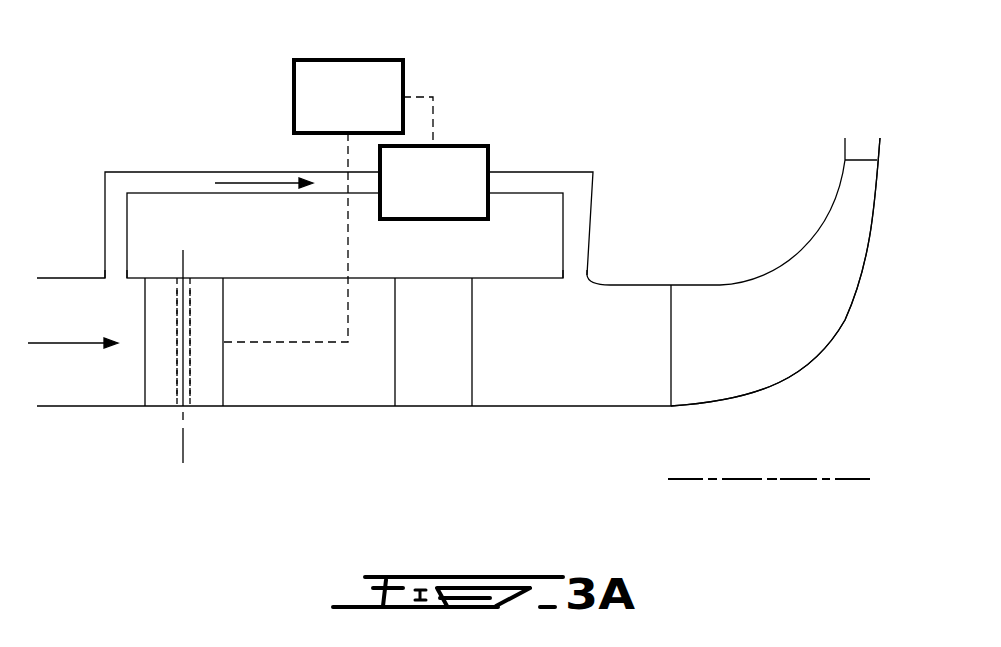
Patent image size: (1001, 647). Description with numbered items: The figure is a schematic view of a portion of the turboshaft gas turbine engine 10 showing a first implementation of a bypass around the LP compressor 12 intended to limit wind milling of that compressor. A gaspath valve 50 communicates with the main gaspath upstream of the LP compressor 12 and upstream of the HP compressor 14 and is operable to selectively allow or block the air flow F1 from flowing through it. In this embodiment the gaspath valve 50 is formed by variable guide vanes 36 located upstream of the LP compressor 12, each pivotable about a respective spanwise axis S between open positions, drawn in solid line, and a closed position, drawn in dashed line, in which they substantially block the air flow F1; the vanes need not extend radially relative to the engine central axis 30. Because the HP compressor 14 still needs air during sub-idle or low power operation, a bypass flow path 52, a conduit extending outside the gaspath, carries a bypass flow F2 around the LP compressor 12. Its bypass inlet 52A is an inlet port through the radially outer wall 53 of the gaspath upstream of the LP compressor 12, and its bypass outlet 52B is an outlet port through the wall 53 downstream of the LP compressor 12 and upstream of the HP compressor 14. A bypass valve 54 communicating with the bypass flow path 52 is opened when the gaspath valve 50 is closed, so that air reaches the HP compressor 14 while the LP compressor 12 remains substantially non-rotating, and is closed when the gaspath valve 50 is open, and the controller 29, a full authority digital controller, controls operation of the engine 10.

The gas turbine engine 10 is at (741, 196).
The LP compressor 12 is at (390, 372).
The HP compressor 14 is at (722, 345).
The controller 29 is at (355, 60).
The engine central axis 30 is at (768, 480).
The variable guide vanes 36 is at (170, 362).
The gaspath valve 50 is at (155, 356).
The bypass flow path 52 is at (178, 185).
The bypass inlet 52A is at (118, 284).
The bypass outlet 52B is at (577, 283).
The wall 53 is at (262, 278).
The bypass valve 54 is at (465, 146).
The spanwise axes S is at (186, 300).
The air flow F1 is at (68, 342).
The bypass flow F2 is at (257, 183).